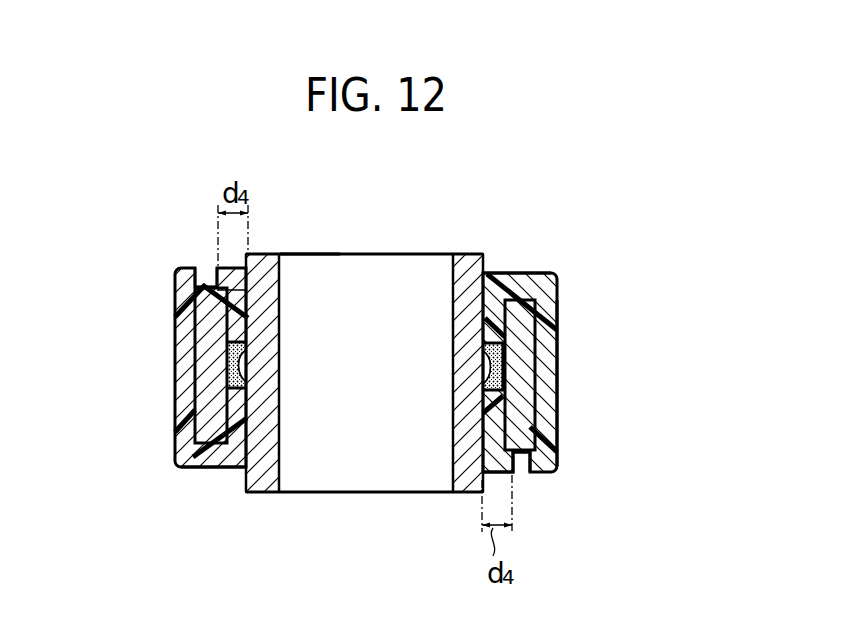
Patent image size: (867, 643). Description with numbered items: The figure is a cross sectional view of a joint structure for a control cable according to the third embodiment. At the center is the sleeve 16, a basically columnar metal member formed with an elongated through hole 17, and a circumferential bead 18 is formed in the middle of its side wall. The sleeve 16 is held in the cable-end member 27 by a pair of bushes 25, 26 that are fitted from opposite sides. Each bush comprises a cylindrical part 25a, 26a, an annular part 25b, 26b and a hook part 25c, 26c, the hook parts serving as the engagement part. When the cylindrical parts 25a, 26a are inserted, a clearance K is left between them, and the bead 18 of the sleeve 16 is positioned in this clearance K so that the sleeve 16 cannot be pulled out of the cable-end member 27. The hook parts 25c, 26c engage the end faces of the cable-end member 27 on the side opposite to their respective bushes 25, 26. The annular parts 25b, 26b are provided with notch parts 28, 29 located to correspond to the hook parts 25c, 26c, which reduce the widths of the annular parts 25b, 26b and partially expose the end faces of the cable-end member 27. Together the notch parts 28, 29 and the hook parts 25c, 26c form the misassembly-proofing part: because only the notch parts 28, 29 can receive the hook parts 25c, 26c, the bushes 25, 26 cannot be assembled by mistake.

The sleeve 16 is at (269, 251).
The through hole 17 is at (298, 253).
The circumferential bead 18 is at (503, 382).
The bush 25 is at (570, 302).
The cylindrical part 25a is at (477, 312).
The annular part 25b is at (523, 273).
The hook part 25c is at (560, 437).
The bush 26 is at (160, 453).
The cylindrical part 26a is at (247, 408).
The annular part 26b is at (213, 468).
The hook part 26c is at (228, 379).
The cable-end member 27 is at (196, 341).
The notch part 28 is at (213, 270).
The notch part 29 is at (517, 458).
The clearance K is at (228, 386).